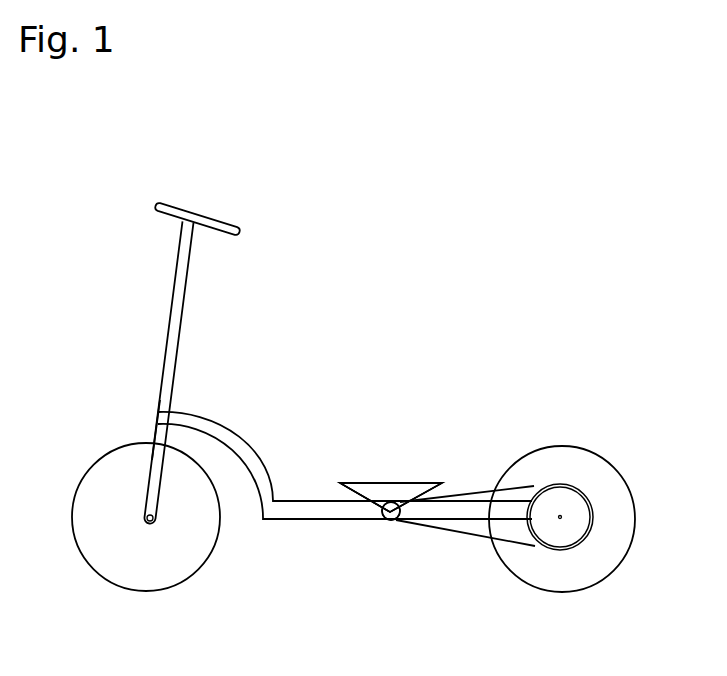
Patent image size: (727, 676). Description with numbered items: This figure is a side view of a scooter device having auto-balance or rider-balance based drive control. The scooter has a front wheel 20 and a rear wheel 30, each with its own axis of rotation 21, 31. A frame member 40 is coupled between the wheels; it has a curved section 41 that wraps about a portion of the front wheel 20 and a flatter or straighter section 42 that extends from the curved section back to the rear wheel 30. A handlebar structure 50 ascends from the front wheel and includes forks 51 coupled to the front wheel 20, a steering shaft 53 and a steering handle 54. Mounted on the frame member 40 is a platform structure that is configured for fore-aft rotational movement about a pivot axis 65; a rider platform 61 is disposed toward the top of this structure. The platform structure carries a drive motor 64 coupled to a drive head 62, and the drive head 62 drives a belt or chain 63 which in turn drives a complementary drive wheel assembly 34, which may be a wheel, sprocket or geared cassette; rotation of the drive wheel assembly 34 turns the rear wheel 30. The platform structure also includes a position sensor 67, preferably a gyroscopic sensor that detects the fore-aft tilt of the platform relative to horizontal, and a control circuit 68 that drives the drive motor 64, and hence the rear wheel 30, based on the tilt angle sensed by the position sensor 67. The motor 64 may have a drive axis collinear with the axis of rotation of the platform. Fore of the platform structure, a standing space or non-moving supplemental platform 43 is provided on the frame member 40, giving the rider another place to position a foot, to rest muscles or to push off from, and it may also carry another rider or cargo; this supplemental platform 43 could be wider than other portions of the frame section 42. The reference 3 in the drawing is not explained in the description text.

The pivot assembly 3 is at (358, 467).
The front wheel 20 is at (149, 592).
The axis of rotation 21 is at (147, 516).
The rear wheel 30 is at (606, 578).
The axis of rotation 31 is at (610, 527).
The drive wheel assembly 34 is at (583, 492).
The frame member 40 is at (270, 553).
The curved section 41 is at (232, 434).
The straighter section 42 is at (460, 490).
The standing space 43 is at (307, 499).
The handlebar structure 50 is at (240, 196).
The forks 51 is at (155, 440).
The steering shaft 53 is at (170, 313).
The steering handle 54 is at (170, 218).
The rider platform 61 is at (437, 482).
The drive head 62 is at (383, 520).
The belt or chain 63 is at (471, 534).
The drive motor 64 is at (383, 482).
The pivot axis 65 is at (400, 527).
The position sensor 67 is at (350, 520).
The control circuit 68 is at (430, 482).